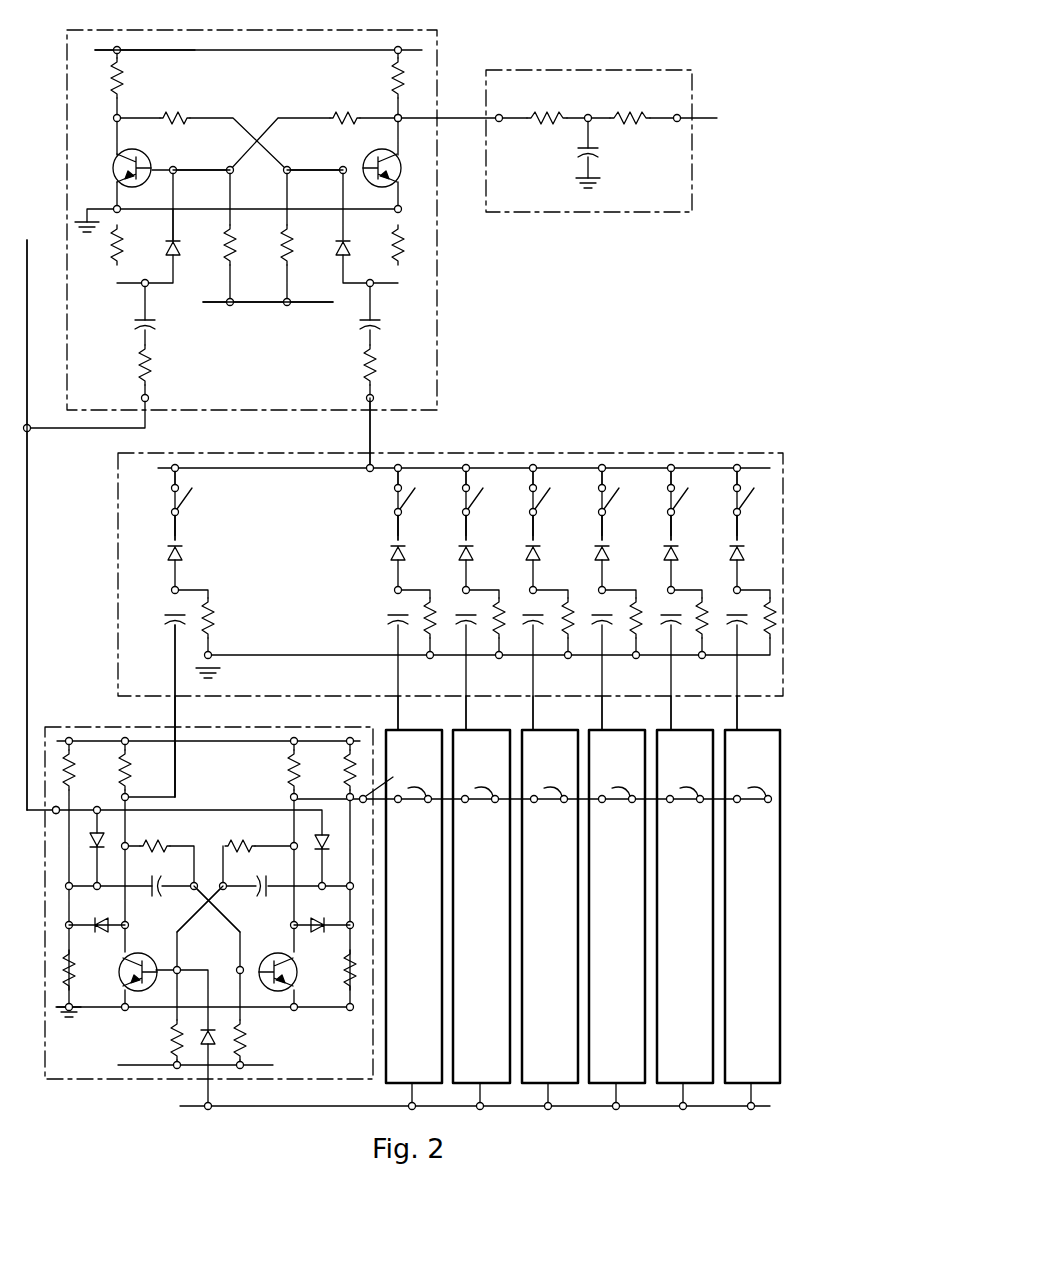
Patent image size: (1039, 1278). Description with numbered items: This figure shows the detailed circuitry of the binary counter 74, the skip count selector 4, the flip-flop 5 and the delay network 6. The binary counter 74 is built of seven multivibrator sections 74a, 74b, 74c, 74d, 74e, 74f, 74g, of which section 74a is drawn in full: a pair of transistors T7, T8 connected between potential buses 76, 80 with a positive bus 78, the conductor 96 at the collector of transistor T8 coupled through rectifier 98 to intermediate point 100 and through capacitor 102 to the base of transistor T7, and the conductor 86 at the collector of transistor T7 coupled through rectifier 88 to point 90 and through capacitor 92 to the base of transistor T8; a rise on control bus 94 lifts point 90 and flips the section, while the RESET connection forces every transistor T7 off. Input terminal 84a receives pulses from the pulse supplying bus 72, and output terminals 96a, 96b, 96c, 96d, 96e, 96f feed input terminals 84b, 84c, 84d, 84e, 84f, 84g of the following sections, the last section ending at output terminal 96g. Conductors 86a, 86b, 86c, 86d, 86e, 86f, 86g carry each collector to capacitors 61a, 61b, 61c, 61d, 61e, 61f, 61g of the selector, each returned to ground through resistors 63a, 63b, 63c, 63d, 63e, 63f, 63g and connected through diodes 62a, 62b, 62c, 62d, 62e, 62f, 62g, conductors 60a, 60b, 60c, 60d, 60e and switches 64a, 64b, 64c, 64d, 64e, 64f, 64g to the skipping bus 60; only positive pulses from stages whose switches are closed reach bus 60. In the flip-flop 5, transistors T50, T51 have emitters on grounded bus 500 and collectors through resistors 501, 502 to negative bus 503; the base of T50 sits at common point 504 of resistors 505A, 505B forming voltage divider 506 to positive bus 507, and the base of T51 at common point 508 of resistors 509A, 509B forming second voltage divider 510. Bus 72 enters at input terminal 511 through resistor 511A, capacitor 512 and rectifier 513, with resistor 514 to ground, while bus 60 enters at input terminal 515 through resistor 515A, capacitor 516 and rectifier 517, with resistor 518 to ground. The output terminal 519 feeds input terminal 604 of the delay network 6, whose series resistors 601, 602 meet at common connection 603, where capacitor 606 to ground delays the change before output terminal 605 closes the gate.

The skip count selector 4 is at (552, 454).
The flip-flop 5 is at (284, 31).
The delay network 6 is at (590, 70).
The skipping bus 60 is at (366, 439).
The pulse supplying bus 72 is at (30, 492).
The binary counter 74 is at (384, 1101).
The grounded bus 500 is at (187, 220).
The resistor 501 is at (384, 78).
The resistor 502 is at (123, 80).
The bus 503 is at (268, 52).
The common point 504 is at (287, 168).
The resistor 505A is at (167, 104).
The resistor 505B is at (293, 254).
The voltage divider 506 is at (292, 194).
The positive bus 507 is at (287, 320).
The common point 508 is at (228, 168).
The resistor 509A is at (342, 102).
The resistor 509B is at (225, 256).
The second voltage divider 510 is at (223, 187).
The input terminal 511 is at (150, 398).
The resistor 511A is at (153, 364).
The capacitor 512 is at (132, 328).
The rectifier 513 is at (166, 242).
The resistor 514 is at (126, 248).
The input terminal 515 is at (365, 400).
The resistor 515A is at (364, 366).
The capacitor 516 is at (380, 330).
The rectifier 517 is at (356, 225).
The resistor 518 is at (390, 252).
The output terminal 519 is at (394, 113).
The transistor T50 is at (370, 154).
The transistor T51 is at (147, 155).
The transistor T7 is at (122, 974).
The transistor T8 is at (294, 973).
The resistor 601 is at (558, 104).
The resistor 602 is at (626, 106).
The common connection 603 is at (589, 113).
The input terminal 604 is at (500, 124).
The output terminal 605 is at (676, 124).
The capacitor 606 is at (603, 154).
The switch 64a is at (181, 509).
The switch 64b is at (404, 509).
The switch 64c is at (472, 509).
The switch 64d is at (539, 509).
The switch 64e is at (608, 509).
The switch 64f is at (679, 509).
The switch 64g is at (743, 509).
The conductor 60a is at (178, 530).
The conductor 60b is at (401, 530).
The conductor 60c is at (469, 530).
The conductor 60d is at (536, 530).
The conductor 60e is at (605, 530).
The diode 62a is at (180, 555).
The diode 62b is at (404, 551).
The diode 62c is at (466, 553).
The diode 62d is at (541, 555).
The diode 62e is at (602, 553).
The diode 62f is at (679, 550).
The diode 62g is at (737, 553).
The capacitor 61a is at (158, 626).
The capacitor 61b is at (388, 622).
The capacitor 61c is at (466, 619).
The capacitor 61d is at (524, 612).
The capacitor 61e is at (602, 619).
The capacitor 61f is at (671, 619).
The capacitor 61g is at (737, 619).
The resistor 63a is at (216, 622).
The resistor 63b is at (438, 604).
The resistor 63c is at (499, 618).
The resistor 63d is at (568, 618).
The resistor 63e is at (648, 592).
The resistor 63f is at (702, 618).
The resistor 63g is at (770, 618).
The conductor 86a is at (172, 723).
The conductor 86b is at (396, 723).
The conductor 86c is at (464, 723).
The conductor 86d is at (532, 723).
The conductor 86e is at (600, 723).
The conductor 86f is at (668, 723).
The conductor 86g is at (736, 723).
The input terminal 84a is at (54, 812).
The input terminal 84b is at (401, 803).
The input terminal 84c is at (468, 803).
The input terminal 84d is at (537, 803).
The input terminal 84e is at (605, 803).
The input terminal 84f is at (673, 803).
The input terminal 84g is at (740, 803).
The output terminal 96a is at (394, 779).
The output terminal 96b is at (418, 788).
The output terminal 96c is at (485, 788).
The output terminal 96d is at (555, 788).
The output terminal 96e is at (623, 788).
The output terminal 96f is at (688, 788).
The output terminal 96g is at (756, 788).
The multivibrator section 74a is at (219, 953).
The multivibrator section 74b is at (427, 958).
The multivibrator section 74c is at (494, 958).
The multivibrator section 74d is at (563, 958).
The multivibrator section 74e is at (630, 958).
The multivibrator section 74f is at (696, 958).
The multivibrator section 74g is at (766, 958).
The potential bus 76 is at (286, 1015).
The positive potential bus 78 is at (161, 1064).
The potential bus 80 is at (250, 758).
The conductor 86 is at (126, 824).
The rectifier 88 is at (108, 933).
The intermediate point 90 is at (70, 886).
The capacitor 92 is at (146, 895).
The control bus 94 is at (225, 810).
The conductor 96 is at (288, 828).
The rectifier 98 is at (332, 933).
The intermediate potential point 100 is at (348, 886).
The capacitor 102 is at (244, 895).
The reset connection RESET is at (192, 1106).